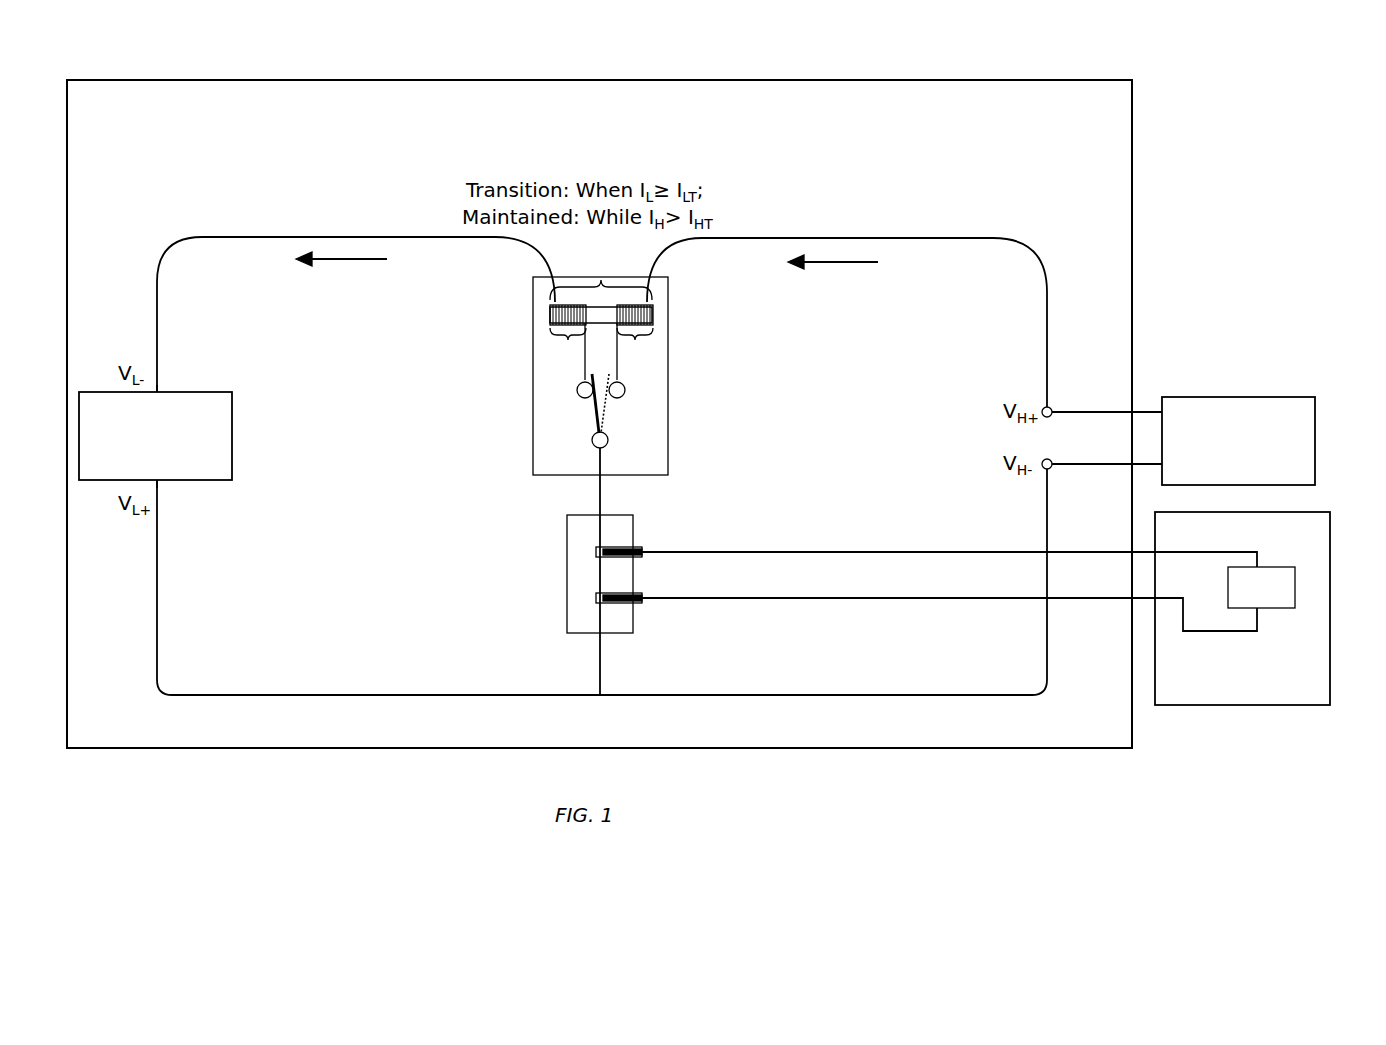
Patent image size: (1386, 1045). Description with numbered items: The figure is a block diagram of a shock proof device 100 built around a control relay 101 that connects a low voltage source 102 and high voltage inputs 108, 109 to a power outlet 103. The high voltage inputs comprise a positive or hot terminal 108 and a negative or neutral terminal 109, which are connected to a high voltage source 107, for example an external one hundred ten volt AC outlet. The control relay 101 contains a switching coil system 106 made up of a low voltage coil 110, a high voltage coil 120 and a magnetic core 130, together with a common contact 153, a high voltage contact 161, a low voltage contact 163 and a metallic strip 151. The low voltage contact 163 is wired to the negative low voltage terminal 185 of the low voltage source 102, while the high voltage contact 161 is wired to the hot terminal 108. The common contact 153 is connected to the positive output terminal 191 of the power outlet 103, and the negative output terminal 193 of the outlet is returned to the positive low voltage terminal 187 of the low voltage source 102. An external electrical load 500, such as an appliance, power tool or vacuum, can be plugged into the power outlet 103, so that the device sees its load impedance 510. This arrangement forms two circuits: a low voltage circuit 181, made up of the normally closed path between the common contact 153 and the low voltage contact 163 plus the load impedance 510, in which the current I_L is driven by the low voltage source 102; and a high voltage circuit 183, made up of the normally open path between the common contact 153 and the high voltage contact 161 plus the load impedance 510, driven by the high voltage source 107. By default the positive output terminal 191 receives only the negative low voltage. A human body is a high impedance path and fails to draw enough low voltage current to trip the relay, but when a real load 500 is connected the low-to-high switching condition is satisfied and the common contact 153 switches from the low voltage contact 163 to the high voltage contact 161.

The shock proof device 100 is at (712, 80).
The low voltage circuit 181 is at (258, 237).
The high voltage circuit 183 is at (848, 238).
The low voltage source 102 is at (97, 392).
The negative low voltage terminal 185 is at (157, 392).
The positive low voltage terminal 187 is at (157, 480).
The control relay 101 is at (668, 323).
The switching coil system 106 is at (562, 311).
The magnetic core 130 is at (550, 315).
The low voltage coil 110 is at (564, 334).
The high voltage coil 120 is at (638, 334).
The low voltage contact 163 is at (577, 390).
The high voltage contact 161 is at (625, 390).
The metallic strip 151 is at (594, 414).
The common contact 153 is at (608, 446).
The power outlet 103 is at (567, 540).
The positive output terminal 191 is at (596, 552).
The negative output terminal 193 is at (596, 598).
The positive high voltage terminal 108 is at (1051, 408).
The negative high voltage terminal 109 is at (1051, 468).
The high voltage source 107 is at (1242, 397).
The external electrical load 500 is at (1261, 578).
The load impedance 510 is at (1275, 608).